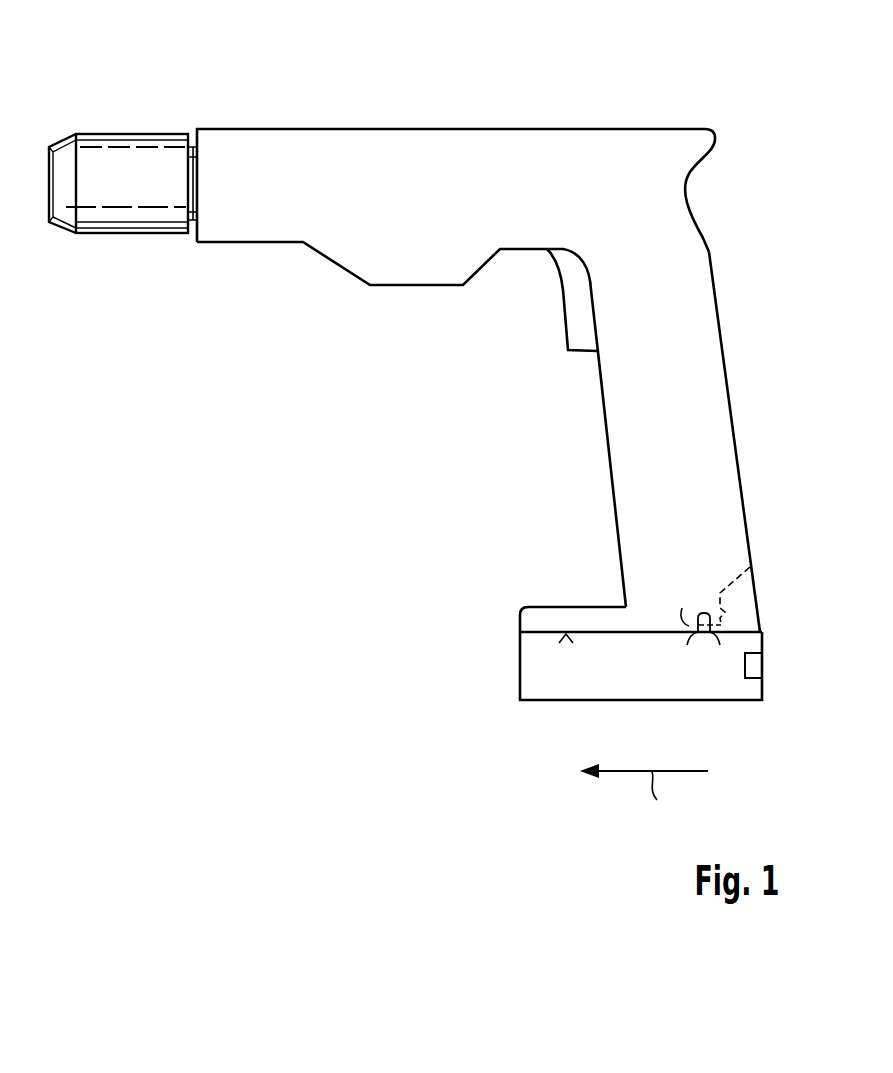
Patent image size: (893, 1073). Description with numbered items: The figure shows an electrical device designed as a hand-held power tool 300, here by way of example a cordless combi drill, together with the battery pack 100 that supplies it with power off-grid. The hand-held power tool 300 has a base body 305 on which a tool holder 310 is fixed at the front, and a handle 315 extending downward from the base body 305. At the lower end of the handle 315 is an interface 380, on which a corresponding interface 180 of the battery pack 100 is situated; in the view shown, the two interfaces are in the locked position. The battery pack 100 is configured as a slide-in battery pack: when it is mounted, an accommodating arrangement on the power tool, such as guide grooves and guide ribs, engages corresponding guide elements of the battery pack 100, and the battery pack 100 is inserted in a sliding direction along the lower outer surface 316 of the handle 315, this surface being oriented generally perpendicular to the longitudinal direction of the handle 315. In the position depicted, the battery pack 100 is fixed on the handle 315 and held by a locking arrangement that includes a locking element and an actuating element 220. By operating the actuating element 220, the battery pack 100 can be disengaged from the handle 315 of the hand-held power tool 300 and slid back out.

The hand-held power tool 300 is at (660, 108).
The base body 305 is at (383, 148).
The tool chuck 310 is at (128, 157).
The handle 315 is at (705, 338).
The lower outer surface 316 is at (568, 636).
The battery pack 100 is at (658, 688).
The actuating element 220 is at (753, 670).
The interface 180 is at (722, 622).
The interface 380 is at (750, 567).